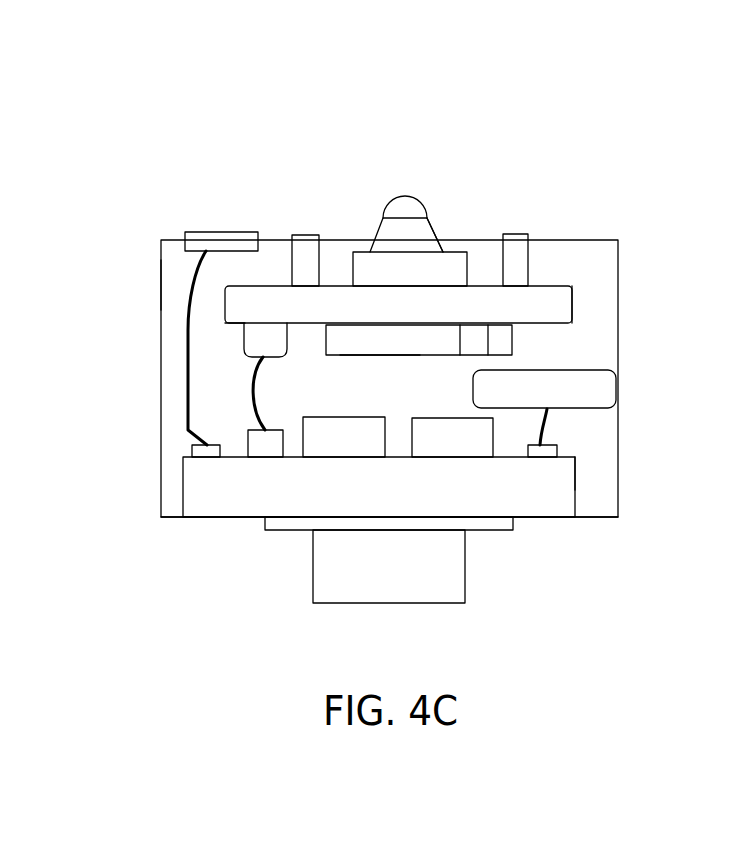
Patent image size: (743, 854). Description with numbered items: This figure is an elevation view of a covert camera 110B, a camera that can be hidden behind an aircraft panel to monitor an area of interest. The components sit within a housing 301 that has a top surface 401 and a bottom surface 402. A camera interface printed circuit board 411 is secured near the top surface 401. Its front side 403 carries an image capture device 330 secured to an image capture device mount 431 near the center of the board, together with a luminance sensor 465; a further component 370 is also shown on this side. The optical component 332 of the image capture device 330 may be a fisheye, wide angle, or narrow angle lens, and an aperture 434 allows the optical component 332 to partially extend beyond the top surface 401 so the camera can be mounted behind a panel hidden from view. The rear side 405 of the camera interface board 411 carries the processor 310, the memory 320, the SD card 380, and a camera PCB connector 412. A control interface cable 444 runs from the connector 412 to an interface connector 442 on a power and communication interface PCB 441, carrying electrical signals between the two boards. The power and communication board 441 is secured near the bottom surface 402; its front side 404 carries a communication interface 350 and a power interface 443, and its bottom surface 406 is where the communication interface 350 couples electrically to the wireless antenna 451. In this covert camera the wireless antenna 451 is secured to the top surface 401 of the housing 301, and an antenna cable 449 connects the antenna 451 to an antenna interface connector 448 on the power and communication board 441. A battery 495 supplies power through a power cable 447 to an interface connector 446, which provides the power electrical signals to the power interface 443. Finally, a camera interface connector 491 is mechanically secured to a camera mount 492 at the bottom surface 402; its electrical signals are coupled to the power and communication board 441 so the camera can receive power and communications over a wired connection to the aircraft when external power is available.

The covert camera 110B is at (571, 106).
The top surface 401 is at (610, 238).
The housing 301 is at (160, 282).
The bottom surface 402 is at (173, 520).
The bottom surface 406 is at (550, 520).
The wireless antenna 451 is at (222, 232).
The support post 370 is at (303, 235).
The luminance sensor 465 is at (515, 234).
The image capture device mount 431 is at (437, 281).
The image capture device 330 is at (372, 240).
The optical component 332 is at (405, 197).
The aperture 434 is at (440, 236).
The front side 403 is at (562, 279).
The camera interface printed circuit board 411 is at (572, 295).
The rear side 405 is at (231, 328).
The camera PCB connector 412 is at (243, 342).
The antenna cable 449 is at (187, 363).
The control interface cable 444 is at (254, 388).
The interface connector 442 is at (247, 433).
The antenna interface connector 448 is at (192, 452).
The power and communication interface PCB 441 is at (577, 502).
The front side 404 is at (566, 451).
The interface connector 446 is at (555, 457).
The power cable 447 is at (549, 421).
The battery 495 is at (610, 388).
The memory 320 is at (512, 330).
The SD card 380 is at (488, 355).
The processor 310 is at (378, 355).
The communication interface 350 is at (313, 417).
The power interface 443 is at (438, 418).
The camera mount 492 is at (275, 530).
The camera interface connector 491 is at (390, 603).